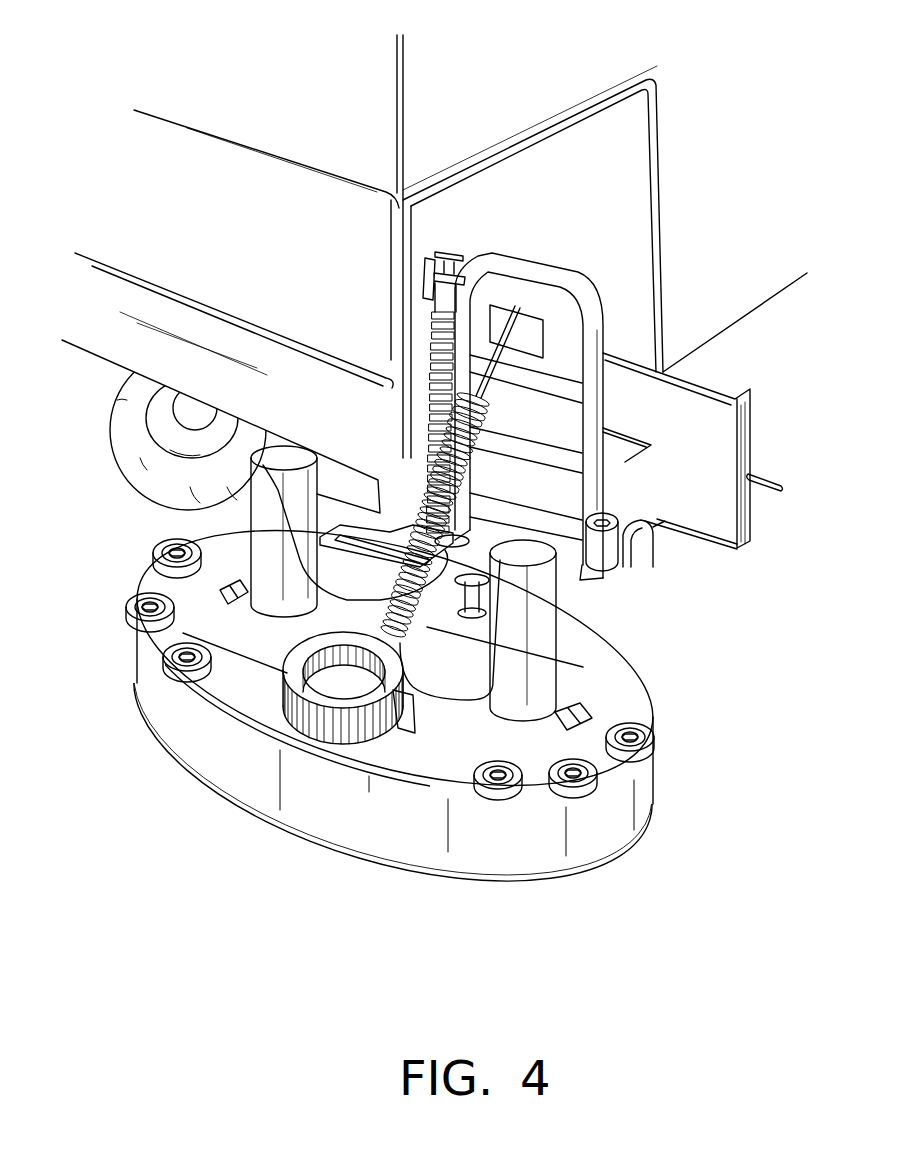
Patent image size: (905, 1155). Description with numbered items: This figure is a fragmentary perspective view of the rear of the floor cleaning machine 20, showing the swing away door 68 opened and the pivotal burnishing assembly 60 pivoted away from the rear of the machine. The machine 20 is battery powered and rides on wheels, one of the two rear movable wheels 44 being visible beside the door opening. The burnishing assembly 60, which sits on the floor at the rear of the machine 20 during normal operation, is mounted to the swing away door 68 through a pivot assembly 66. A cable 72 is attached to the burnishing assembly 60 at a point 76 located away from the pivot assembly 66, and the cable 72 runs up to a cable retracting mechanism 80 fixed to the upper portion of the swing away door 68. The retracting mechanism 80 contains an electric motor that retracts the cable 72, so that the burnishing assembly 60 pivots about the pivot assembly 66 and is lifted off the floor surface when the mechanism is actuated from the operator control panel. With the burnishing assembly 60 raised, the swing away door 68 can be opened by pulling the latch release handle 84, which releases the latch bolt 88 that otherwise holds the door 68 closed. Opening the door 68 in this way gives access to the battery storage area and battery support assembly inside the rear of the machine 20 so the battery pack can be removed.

The floor cleaning machine 20 is at (103, 93).
The movable wheels 44 is at (123, 448).
The burnishing assembly 60 is at (619, 856).
The pivot assembly 66 is at (355, 520).
The swing away door 68 is at (697, 407).
The cable 72 is at (575, 352).
The point 76 is at (412, 700).
The cable retracting mechanism 80 is at (528, 277).
The latch release handle 84 is at (640, 458).
The latch bolt 88 is at (773, 480).